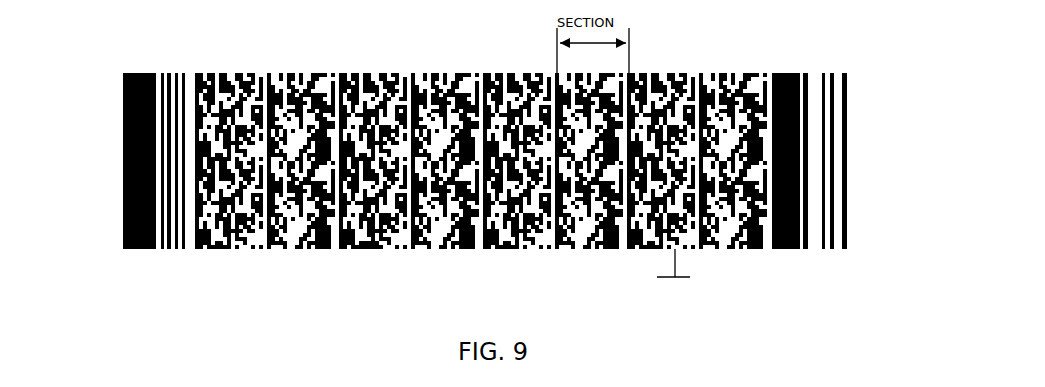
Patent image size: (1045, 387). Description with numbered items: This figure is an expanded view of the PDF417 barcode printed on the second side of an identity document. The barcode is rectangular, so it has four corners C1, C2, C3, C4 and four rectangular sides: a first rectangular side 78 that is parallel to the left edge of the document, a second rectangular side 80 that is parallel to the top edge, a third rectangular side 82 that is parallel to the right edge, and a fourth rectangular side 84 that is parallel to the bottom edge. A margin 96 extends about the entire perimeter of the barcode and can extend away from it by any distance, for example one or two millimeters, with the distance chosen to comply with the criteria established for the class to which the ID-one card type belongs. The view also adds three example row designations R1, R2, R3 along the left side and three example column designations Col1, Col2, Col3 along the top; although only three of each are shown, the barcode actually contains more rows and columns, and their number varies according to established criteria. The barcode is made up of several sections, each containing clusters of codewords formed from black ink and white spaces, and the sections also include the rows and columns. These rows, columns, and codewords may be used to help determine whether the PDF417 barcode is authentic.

The first rectangular side 78 is at (122, 143).
The second rectangular side 80 is at (422, 73).
The third rectangular side 82 is at (848, 157).
The fourth rectangular side 84 is at (373, 249).
The margin 96 is at (675, 262).
The corner C1 is at (122, 249).
The corner C2 is at (123, 73).
The corner C3 is at (848, 73).
The corner C4 is at (847, 249).
The row designation R1 is at (197, 86).
The row designation R2 is at (197, 99).
The row designation R3 is at (197, 111).
The column designation Col1 is at (286, 43).
The column designation Col2 is at (312, 73).
The column designation Col3 is at (337, 43).